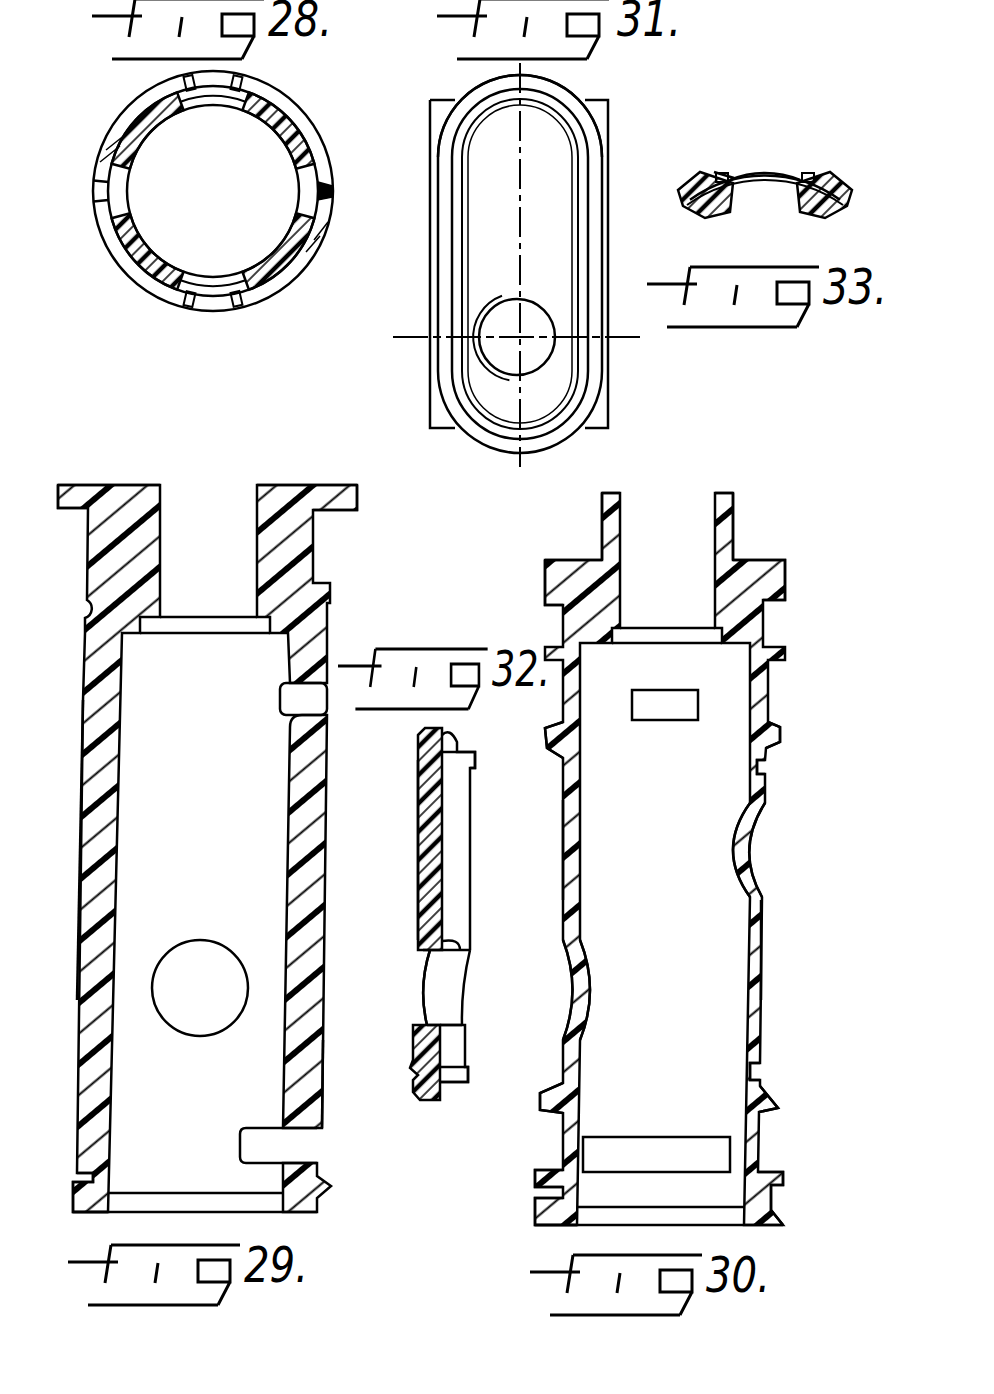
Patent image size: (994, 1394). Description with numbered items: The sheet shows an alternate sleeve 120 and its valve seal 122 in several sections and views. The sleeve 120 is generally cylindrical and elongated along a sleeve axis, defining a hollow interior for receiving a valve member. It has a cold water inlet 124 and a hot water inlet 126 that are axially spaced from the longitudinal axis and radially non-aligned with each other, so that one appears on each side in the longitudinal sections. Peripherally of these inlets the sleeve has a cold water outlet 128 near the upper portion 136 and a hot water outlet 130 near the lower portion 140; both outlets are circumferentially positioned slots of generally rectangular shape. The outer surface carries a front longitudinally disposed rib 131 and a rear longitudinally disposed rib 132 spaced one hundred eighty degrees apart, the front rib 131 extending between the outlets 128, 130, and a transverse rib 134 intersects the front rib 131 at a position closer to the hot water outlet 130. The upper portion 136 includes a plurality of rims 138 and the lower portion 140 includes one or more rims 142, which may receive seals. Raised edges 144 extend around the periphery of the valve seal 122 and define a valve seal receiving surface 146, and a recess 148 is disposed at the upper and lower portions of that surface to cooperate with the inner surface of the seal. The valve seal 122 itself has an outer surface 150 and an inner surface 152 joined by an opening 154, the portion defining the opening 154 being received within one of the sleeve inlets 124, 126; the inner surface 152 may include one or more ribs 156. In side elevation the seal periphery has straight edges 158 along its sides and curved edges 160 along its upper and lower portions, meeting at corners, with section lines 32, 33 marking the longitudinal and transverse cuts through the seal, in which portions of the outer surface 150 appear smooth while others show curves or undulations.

In FIG. 29, the sleeve 120 is at (80, 770).
In FIG. 30, the sleeve 120 is at (766, 980).
In FIG. 31, the valve seal 122 is at (612, 99).
In FIG. 32, the valve seal 122 is at (417, 882).
In FIG. 30, the cold water inlet 124 is at (760, 896).
In FIG. 29, the hot water inlet 126 is at (200, 942).
In FIG. 30, the hot water inlet 126 is at (565, 955).
In FIG. 29, the cold water outlet 128 is at (305, 716).
In FIG. 30, the cold water outlet 128 is at (668, 715).
In FIG. 29, the hot water outlet 130 is at (285, 1162).
In FIG. 30, the hot water outlet 130 is at (715, 1172).
In FIG. 28, the front longitudinally disposed rib 131 is at (107, 197).
In FIG. 29, the front longitudinally disposed rib 131 is at (316, 1070).
In FIG. 28, the rear longitudinally disposed rib 132 is at (330, 197).
In FIG. 29, the rear longitudinally disposed rib 132 is at (77, 975).
In FIG. 28, the transverse rib 134 is at (100, 237).
In FIG. 29, the upper portion 136 is at (302, 482).
In FIG. 30, the upper portion 136 is at (736, 492).
In FIG. 30, the rims 138 is at (783, 647).
In FIG. 29, the lower portion 140 is at (74, 1215).
In FIG. 30, the lower portion 140 is at (553, 1225).
In FIG. 28, the rims 142 is at (320, 153).
In FIG. 29, the rims 142 is at (322, 1195).
In FIG. 30, the rims 142 is at (782, 1200).
In FIG. 28, the raised edges 144 is at (283, 260).
In FIG. 30, the raised edges 144 is at (540, 1113).
In FIG. 28, the valve seal receiving surface 146 is at (240, 290).
In FIG. 30, the valve seal receiving surface 146 is at (762, 937).
In FIG. 28, the recess 148 is at (160, 293).
In FIG. 30, the recess 148 is at (757, 1080).
In FIG. 31, the outer surface 150 is at (485, 210).
In FIG. 33, the outer surface 150 is at (820, 226).
In FIG. 32, the outer surface 150 is at (418, 838).
In FIG. 33, the inner surface 152 is at (715, 177).
In FIG. 32, the inner surface 152 is at (442, 810).
In FIG. 31, the opening 154 is at (500, 367).
In FIG. 33, the opening 154 is at (745, 153).
In FIG. 32, the opening 154 is at (422, 1026).
In FIG. 33, the ribs 156 is at (820, 175).
In FIG. 32, the ribs 156 is at (460, 1082).
In FIG. 31, the straight edges 158 is at (608, 232).
In FIG. 33, the straight edges 158 is at (851, 182).
In FIG. 31, the curved edges 160 is at (474, 441).
In FIG. 31, the section line 32— 32 is at (460, 470).
In FIG. 31, the section line 33— 33 is at (640, 378).